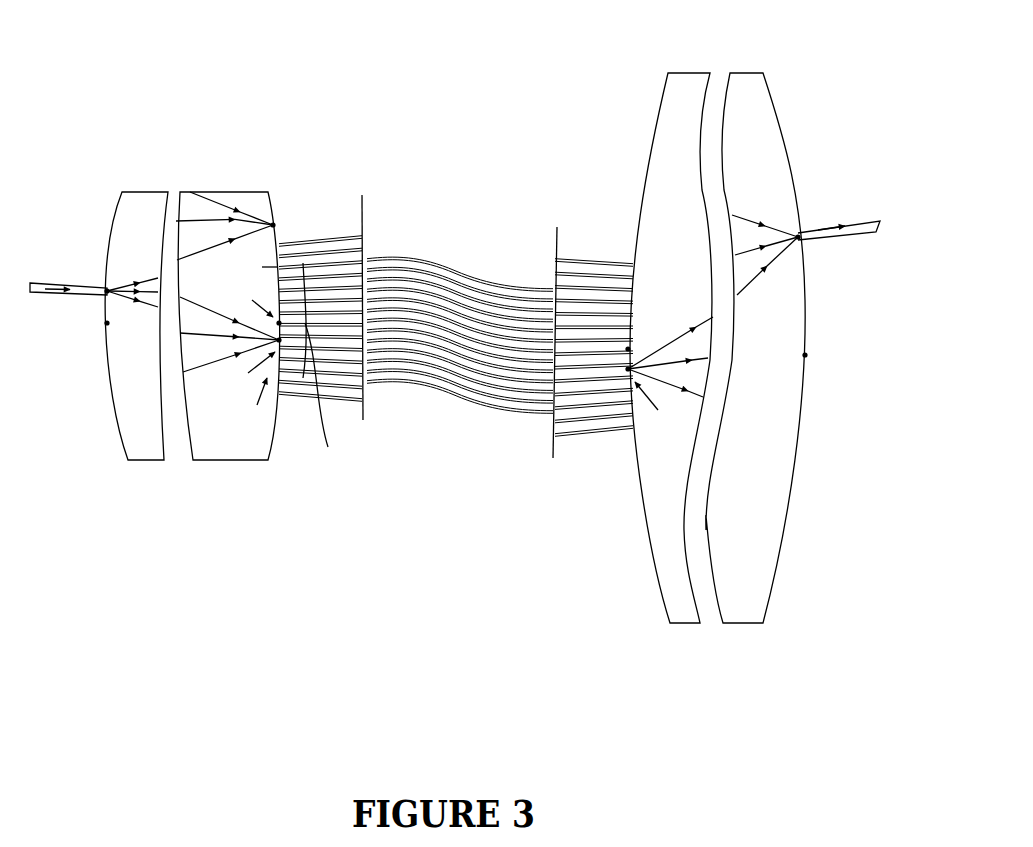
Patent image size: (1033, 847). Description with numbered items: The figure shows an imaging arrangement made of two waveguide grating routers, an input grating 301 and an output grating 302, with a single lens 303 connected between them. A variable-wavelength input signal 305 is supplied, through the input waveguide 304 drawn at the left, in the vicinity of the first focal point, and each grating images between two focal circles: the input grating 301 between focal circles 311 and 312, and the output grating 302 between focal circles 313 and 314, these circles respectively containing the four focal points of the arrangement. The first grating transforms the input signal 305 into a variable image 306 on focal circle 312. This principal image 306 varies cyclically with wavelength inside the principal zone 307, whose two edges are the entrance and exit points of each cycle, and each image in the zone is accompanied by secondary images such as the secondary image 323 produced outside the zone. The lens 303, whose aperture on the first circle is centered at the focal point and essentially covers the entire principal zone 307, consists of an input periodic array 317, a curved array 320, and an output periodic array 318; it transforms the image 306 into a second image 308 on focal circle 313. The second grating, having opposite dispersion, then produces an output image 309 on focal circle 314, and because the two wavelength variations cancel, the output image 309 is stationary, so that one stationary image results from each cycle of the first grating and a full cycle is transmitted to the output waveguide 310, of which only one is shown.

The input grating 301 is at (170, 152).
The output grating 302 is at (754, 331).
The lens 303 is at (624, 134).
The input waveguide 304 is at (56, 289).
The input signal B0 305 is at (126, 269).
The image B1 306 is at (242, 370).
The principal zone P1P2 307 is at (392, 366).
The second image B2 308 is at (651, 410).
The output image B3 309 is at (779, 214).
The output waveguide 310 is at (853, 232).
The focal circle 311 is at (117, 448).
The focal circle 312 is at (281, 445).
The focal circle 313 is at (653, 578).
The focal circle 314 is at (780, 570).
The input periodic array 317 is at (352, 186).
The output periodic array 318 is at (625, 207).
The curved array 320 is at (460, 316).
The secondary image 323 is at (270, 217).